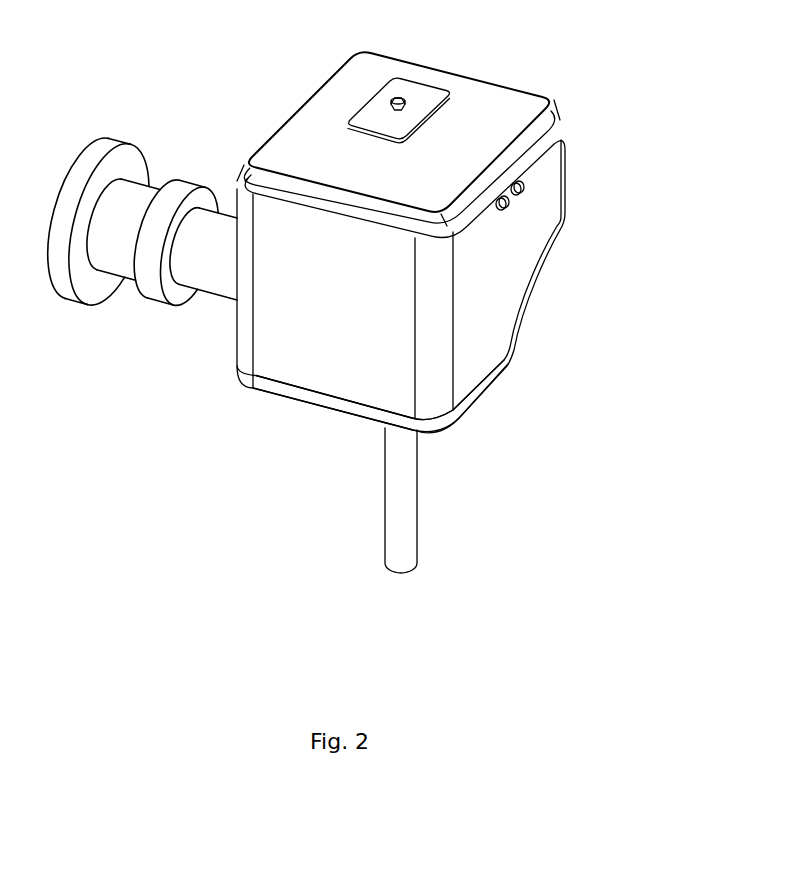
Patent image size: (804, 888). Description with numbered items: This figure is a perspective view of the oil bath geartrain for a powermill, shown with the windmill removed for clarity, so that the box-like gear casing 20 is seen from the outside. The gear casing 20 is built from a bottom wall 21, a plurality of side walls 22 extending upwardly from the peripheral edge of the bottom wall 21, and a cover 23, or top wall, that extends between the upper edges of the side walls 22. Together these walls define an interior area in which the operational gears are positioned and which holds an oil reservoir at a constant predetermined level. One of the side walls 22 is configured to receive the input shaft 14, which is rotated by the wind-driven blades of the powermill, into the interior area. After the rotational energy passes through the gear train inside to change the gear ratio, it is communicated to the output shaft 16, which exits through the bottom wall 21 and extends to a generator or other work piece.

The gear casing 20 is at (590, 89).
The cover 23 is at (491, 102).
The side walls 22 is at (345, 331).
The bottom wall 21 is at (485, 393).
The output shaft 16 is at (397, 548).
The input shaft 14 is at (218, 270).